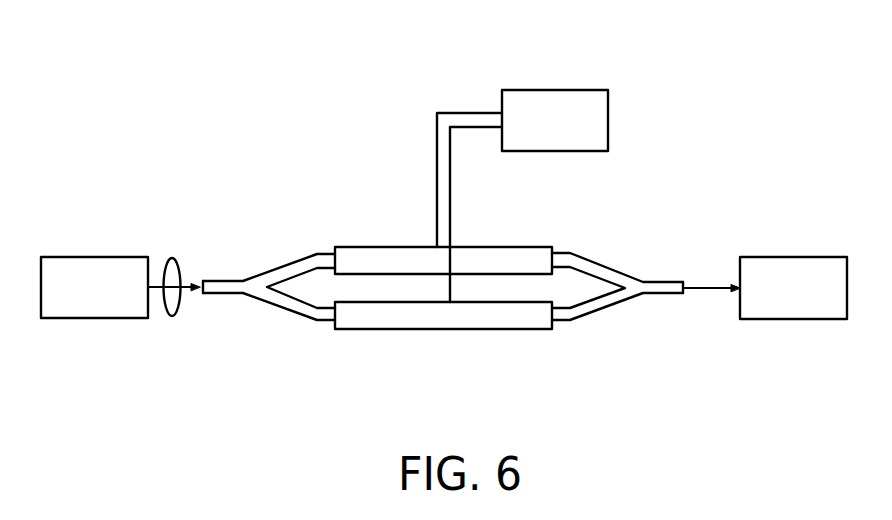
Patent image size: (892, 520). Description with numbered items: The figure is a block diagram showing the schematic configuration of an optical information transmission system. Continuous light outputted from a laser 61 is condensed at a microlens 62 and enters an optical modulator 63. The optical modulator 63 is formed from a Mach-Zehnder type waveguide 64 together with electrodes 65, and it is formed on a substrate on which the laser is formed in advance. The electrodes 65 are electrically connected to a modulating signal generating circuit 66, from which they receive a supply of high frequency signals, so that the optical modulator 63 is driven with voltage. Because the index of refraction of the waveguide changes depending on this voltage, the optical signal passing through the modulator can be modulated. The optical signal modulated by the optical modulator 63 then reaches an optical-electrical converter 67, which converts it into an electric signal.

The laser 61 is at (93, 318).
The microlens 62 is at (172, 258).
The optical modulator 63 is at (281, 310).
The Mach-Zehnder type waveguide 64 is at (627, 292).
The electrodes 65 is at (403, 262).
The modulating signal generating circuit 66 is at (550, 90).
The optical-electrical converter 67 is at (800, 319).